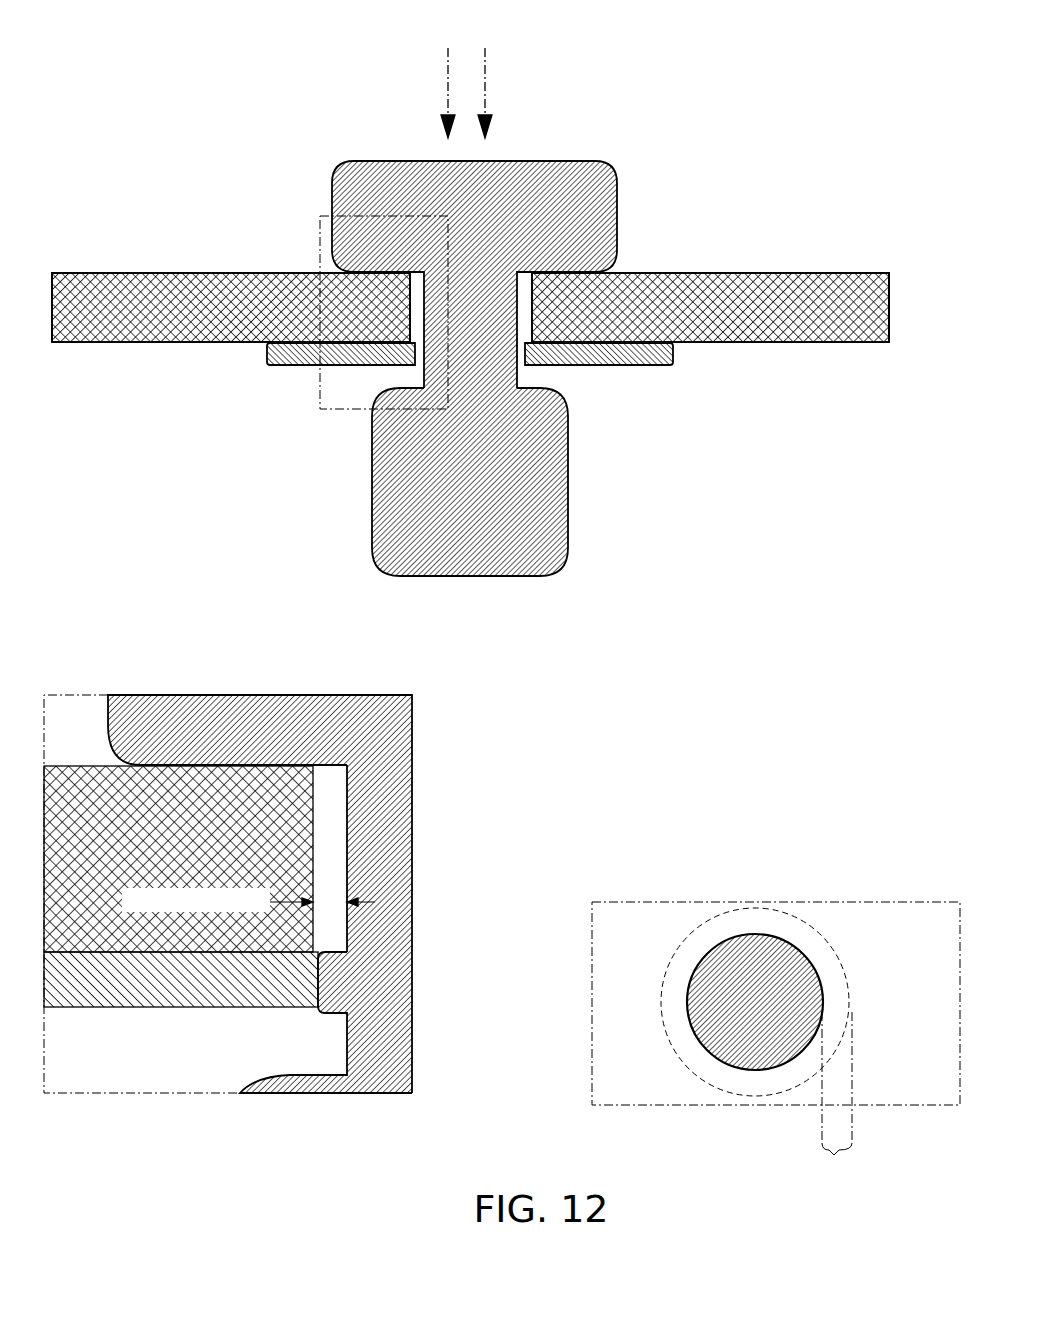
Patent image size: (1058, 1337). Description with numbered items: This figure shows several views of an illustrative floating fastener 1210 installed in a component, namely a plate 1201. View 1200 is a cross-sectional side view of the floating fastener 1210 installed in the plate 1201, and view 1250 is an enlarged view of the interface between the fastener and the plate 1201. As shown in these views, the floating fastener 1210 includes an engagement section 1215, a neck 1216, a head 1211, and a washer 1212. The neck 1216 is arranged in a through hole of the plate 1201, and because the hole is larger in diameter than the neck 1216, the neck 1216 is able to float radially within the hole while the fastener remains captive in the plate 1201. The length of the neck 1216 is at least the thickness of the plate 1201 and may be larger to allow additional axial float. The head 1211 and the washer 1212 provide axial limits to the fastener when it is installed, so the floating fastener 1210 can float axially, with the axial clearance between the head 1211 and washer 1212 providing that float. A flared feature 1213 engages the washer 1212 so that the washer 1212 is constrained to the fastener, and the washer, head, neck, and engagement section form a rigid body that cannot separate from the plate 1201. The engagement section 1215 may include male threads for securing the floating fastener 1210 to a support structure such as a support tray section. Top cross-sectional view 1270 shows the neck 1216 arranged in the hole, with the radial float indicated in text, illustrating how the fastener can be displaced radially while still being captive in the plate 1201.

The view 1200 is at (157, 162).
The plate 1201 is at (183, 324).
The floating fastener 1210 is at (596, 163).
The head 1211 is at (211, 744).
The washer 1212 is at (151, 994).
The flared feature 1213 is at (341, 997).
The engagement section 1215 is at (598, 392).
The neck 1216 is at (438, 777).
The view 1250 is at (320, 236).
The top cross-sectional view 1270 is at (483, 37).